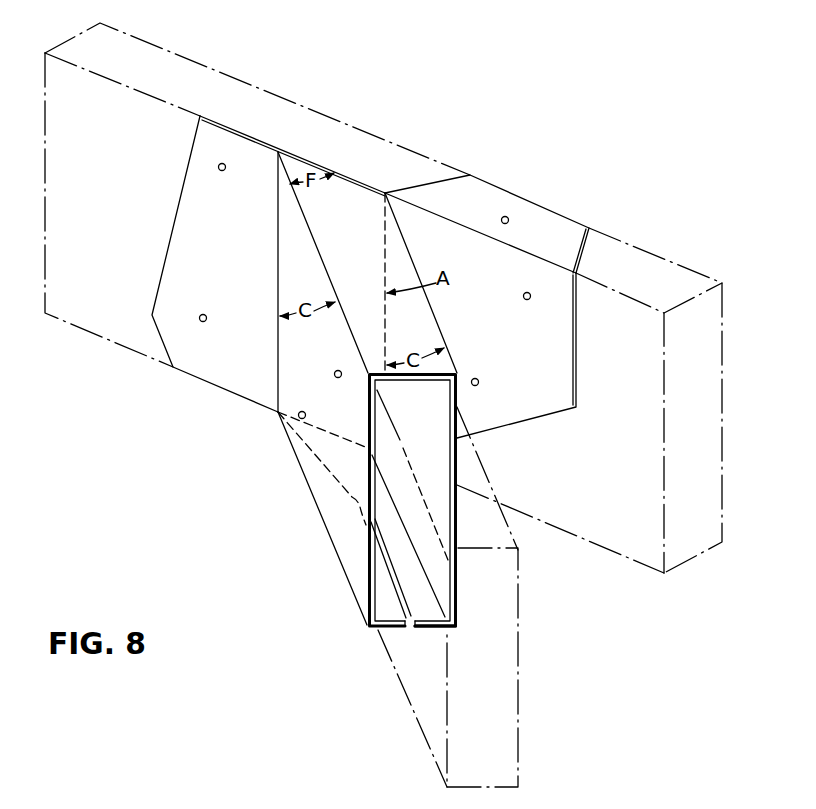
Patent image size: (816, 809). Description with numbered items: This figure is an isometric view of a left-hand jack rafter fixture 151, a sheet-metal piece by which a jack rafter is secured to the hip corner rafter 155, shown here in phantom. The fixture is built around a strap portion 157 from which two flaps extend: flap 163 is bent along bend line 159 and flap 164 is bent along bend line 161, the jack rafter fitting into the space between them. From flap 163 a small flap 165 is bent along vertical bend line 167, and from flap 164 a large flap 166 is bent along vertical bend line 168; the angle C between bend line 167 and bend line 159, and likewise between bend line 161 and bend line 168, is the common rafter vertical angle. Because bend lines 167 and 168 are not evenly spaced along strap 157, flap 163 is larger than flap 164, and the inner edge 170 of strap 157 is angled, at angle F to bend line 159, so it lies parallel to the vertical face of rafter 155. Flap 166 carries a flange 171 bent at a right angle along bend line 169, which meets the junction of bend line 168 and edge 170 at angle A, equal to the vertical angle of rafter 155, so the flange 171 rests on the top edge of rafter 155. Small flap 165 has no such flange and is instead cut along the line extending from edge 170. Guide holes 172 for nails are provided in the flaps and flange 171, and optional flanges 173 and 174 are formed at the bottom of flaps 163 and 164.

The jack rafter fixture 151 is at (294, 458).
The hip corner rafter 155 is at (672, 260).
The strap portion 157 is at (347, 219).
The bend line 159 is at (320, 246).
The bend line 161 is at (435, 324).
The flap 163 is at (330, 508).
The flap 164 is at (460, 558).
The small flap 165 is at (217, 261).
The large flap 166 is at (461, 261).
The bend line 167 is at (278, 372).
The bend line 168 is at (383, 262).
The bend line 169 is at (425, 211).
The inner edge of strap 170 is at (318, 162).
The flange 171 is at (507, 202).
The guide holes 172 is at (224, 164).
The flange 173 is at (397, 630).
The flange 174 is at (447, 633).